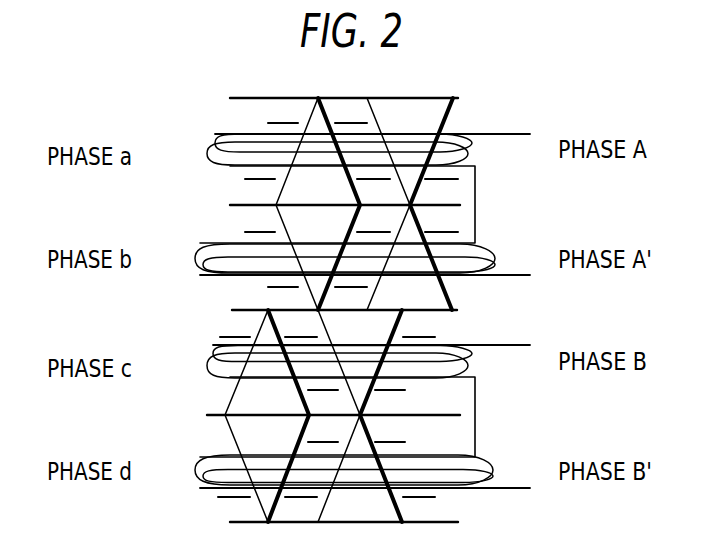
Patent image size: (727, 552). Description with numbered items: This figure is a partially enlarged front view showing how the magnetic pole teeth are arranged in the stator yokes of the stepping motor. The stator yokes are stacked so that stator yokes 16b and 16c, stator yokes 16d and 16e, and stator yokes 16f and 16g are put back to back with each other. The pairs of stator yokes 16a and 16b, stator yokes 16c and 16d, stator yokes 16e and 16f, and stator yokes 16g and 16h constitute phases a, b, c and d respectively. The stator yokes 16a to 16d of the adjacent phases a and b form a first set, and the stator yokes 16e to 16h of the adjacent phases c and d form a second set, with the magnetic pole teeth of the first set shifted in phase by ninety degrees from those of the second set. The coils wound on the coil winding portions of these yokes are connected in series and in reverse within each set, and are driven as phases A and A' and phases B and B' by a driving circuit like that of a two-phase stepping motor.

The stator yoke 16a is at (270, 115).
The stator yoke 16b is at (252, 193).
The stator yoke 16c is at (252, 222).
The stator yoke 16d is at (270, 297).
The stator yoke 16e is at (237, 325).
The stator yoke 16f is at (405, 403).
The stator yoke 16g is at (405, 427).
The stator yoke 16h is at (440, 512).